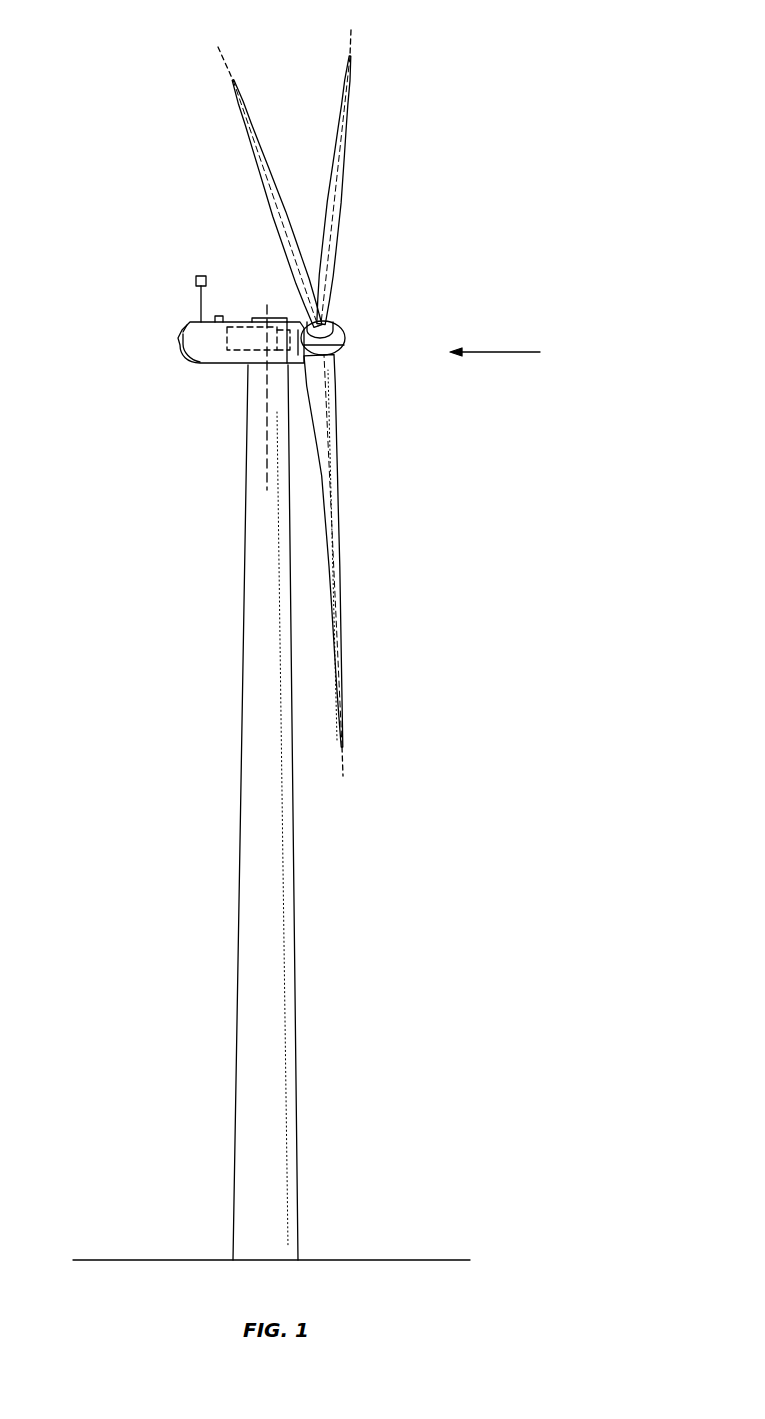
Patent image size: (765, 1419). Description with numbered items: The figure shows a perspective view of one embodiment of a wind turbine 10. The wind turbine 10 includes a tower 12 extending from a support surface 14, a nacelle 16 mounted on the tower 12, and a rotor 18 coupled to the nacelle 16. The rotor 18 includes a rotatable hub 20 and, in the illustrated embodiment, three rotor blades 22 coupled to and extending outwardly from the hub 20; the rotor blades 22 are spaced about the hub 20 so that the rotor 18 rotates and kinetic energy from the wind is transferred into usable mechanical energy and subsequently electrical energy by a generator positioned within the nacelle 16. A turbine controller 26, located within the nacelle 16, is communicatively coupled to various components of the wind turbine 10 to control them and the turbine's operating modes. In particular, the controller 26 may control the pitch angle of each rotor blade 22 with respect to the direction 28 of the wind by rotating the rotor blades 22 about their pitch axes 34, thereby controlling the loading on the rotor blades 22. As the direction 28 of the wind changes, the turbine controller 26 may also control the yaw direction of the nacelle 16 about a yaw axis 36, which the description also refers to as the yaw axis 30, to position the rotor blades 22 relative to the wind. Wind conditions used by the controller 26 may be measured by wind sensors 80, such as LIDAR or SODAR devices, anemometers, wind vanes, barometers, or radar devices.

The wind turbine 10 is at (480, 170).
The tower 12 is at (291, 945).
The support surface 14 is at (155, 1258).
The nacelle 16 is at (213, 365).
The rotor 18 is at (355, 310).
The rotatable hub 20 is at (346, 345).
The rotor blade 22 is at (333, 168).
The turbine controller 26 is at (243, 318).
The direction of the wind 28 is at (503, 352).
The yaw axis 30 is at (335, 357).
The pitch axis 34 is at (228, 75).
The yaw axis 36 is at (265, 432).
The wind sensor 80 is at (197, 286).